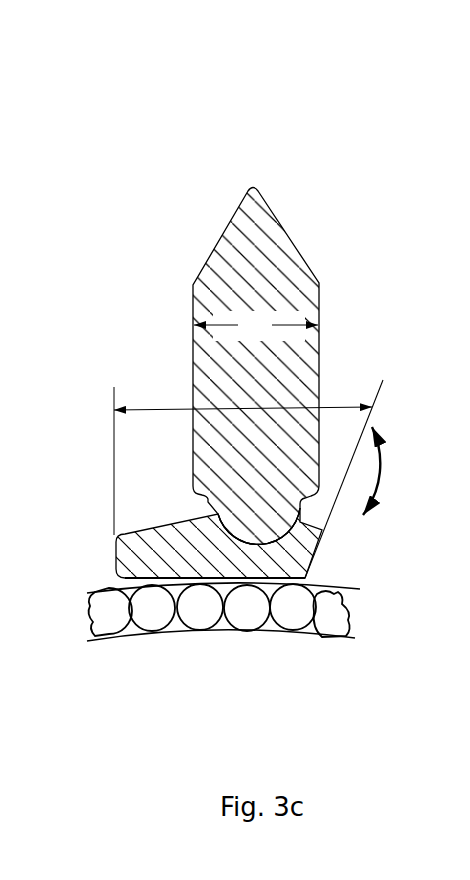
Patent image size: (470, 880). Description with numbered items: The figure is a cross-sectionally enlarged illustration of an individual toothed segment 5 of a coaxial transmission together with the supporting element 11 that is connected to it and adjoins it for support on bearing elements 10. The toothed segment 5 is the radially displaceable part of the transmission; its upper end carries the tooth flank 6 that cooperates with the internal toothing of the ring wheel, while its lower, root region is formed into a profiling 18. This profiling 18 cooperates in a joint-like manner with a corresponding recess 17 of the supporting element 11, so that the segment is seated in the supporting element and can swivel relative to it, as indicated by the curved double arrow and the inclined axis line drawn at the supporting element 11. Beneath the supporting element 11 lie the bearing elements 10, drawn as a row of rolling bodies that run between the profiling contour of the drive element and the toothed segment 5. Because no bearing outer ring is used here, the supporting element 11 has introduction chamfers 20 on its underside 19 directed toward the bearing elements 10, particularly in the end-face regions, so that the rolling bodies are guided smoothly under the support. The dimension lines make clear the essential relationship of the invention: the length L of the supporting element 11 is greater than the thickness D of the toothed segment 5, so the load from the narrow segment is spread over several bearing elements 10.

The toothed segment 5 is at (242, 307).
The tooth flank 6 is at (273, 199).
The recess 17 is at (219, 532).
The profiling 18 is at (246, 520).
The supporting element 11 is at (319, 558).
The introduction chamfer 20 is at (117, 581).
The bearing element 10 is at (247, 612).
The underside 19 is at (176, 609).
The length of the supporting element L is at (162, 410).
The thickness of the toothed segment D is at (256, 326).